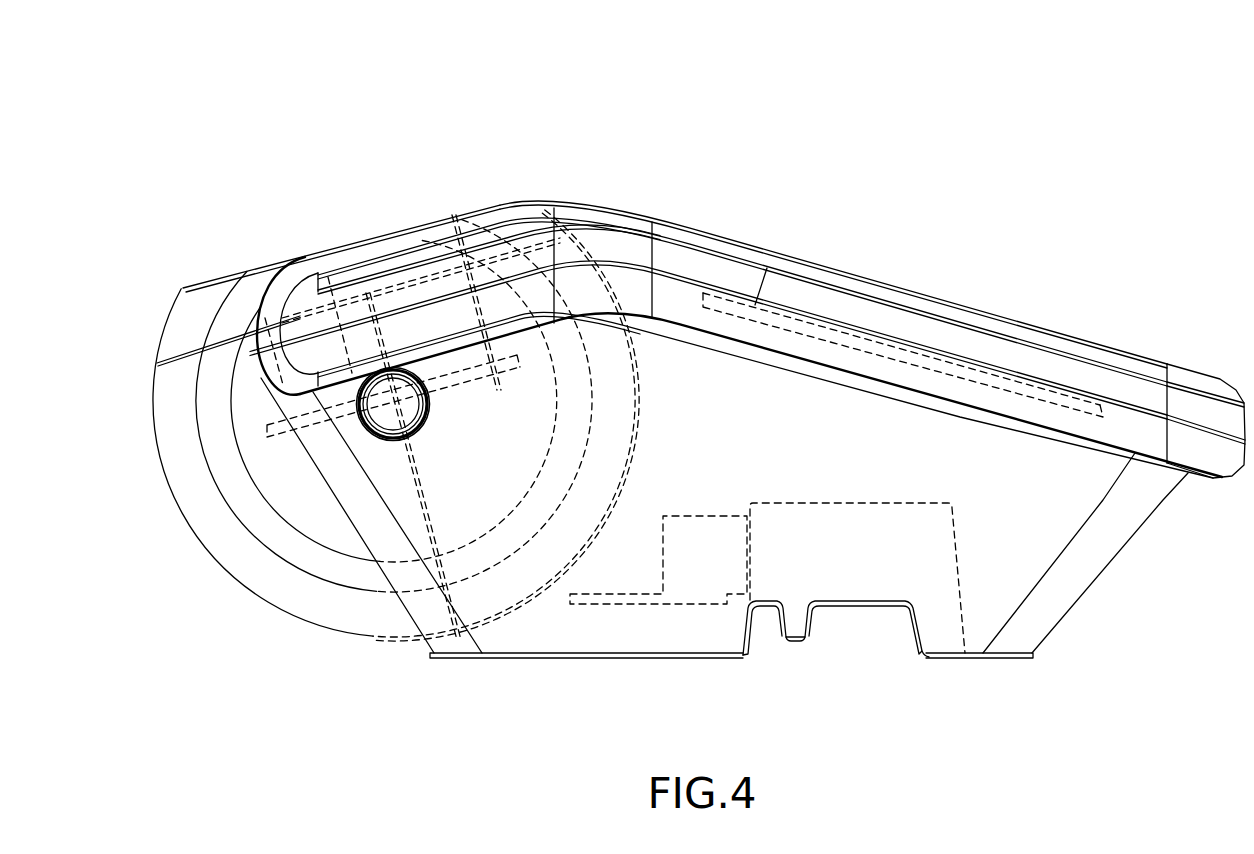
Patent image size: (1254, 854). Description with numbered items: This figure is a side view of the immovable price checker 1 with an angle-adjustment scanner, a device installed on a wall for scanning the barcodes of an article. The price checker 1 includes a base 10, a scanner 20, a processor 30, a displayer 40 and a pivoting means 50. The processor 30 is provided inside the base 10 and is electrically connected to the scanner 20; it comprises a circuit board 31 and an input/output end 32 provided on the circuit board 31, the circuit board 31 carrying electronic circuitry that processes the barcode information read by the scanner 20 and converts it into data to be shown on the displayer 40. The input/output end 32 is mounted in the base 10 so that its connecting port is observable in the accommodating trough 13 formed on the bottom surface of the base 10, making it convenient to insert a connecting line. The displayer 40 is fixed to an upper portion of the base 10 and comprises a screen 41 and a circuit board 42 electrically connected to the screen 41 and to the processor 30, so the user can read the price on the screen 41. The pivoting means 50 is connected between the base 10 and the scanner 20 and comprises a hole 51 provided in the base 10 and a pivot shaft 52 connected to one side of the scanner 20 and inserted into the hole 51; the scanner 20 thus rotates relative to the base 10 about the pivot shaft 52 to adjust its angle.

The price checker 1 is at (708, 53).
The base 10 is at (1113, 350).
The accommodating trough 13 is at (947, 568).
The scanner 20 is at (170, 325).
The processor 30 is at (536, 703).
The circuit board 31 is at (603, 603).
The input/output end 32 is at (697, 577).
The displayer 40 is at (782, 168).
The screen 41 is at (757, 307).
The circuit board 42 is at (727, 293).
The pivoting means 50 is at (277, 685).
The hole 51 is at (390, 422).
The pivot shaft 52 is at (403, 425).